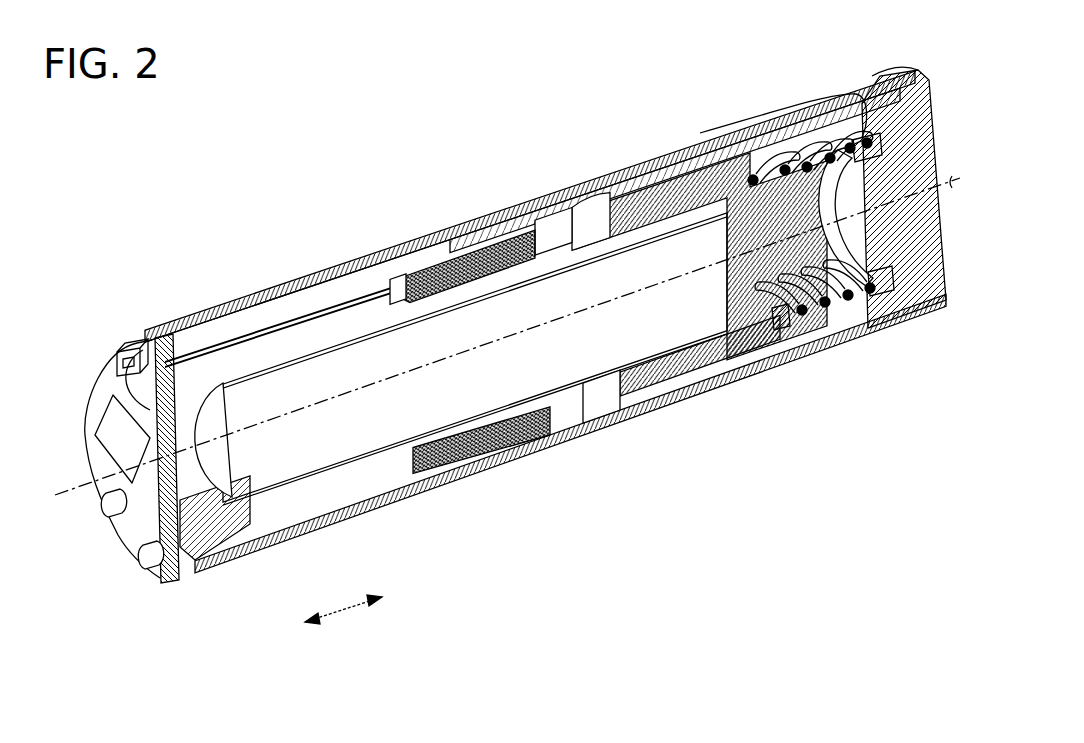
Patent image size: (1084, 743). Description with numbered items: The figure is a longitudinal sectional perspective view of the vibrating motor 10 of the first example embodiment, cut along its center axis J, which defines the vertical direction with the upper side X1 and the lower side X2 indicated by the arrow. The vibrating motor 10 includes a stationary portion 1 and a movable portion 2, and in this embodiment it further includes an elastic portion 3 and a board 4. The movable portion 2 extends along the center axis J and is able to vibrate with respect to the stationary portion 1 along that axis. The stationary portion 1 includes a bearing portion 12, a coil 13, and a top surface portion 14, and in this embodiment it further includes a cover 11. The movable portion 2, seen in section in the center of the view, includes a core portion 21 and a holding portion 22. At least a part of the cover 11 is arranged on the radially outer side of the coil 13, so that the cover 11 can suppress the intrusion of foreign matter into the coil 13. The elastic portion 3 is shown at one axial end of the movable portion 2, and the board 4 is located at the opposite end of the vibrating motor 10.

The vibrating motor 10 is at (802, 26).
The stationary portion 1 is at (486, 128).
The cover 11 is at (298, 282).
The bearing portion 12 is at (360, 312).
The coil 13 is at (453, 278).
The top surface portion 14 is at (825, 87).
The movable portion 2 is at (511, 325).
The core portion 21 is at (600, 356).
The holding portion 22 is at (690, 366).
The elastic portion 3 is at (790, 312).
The board 4 is at (102, 385).